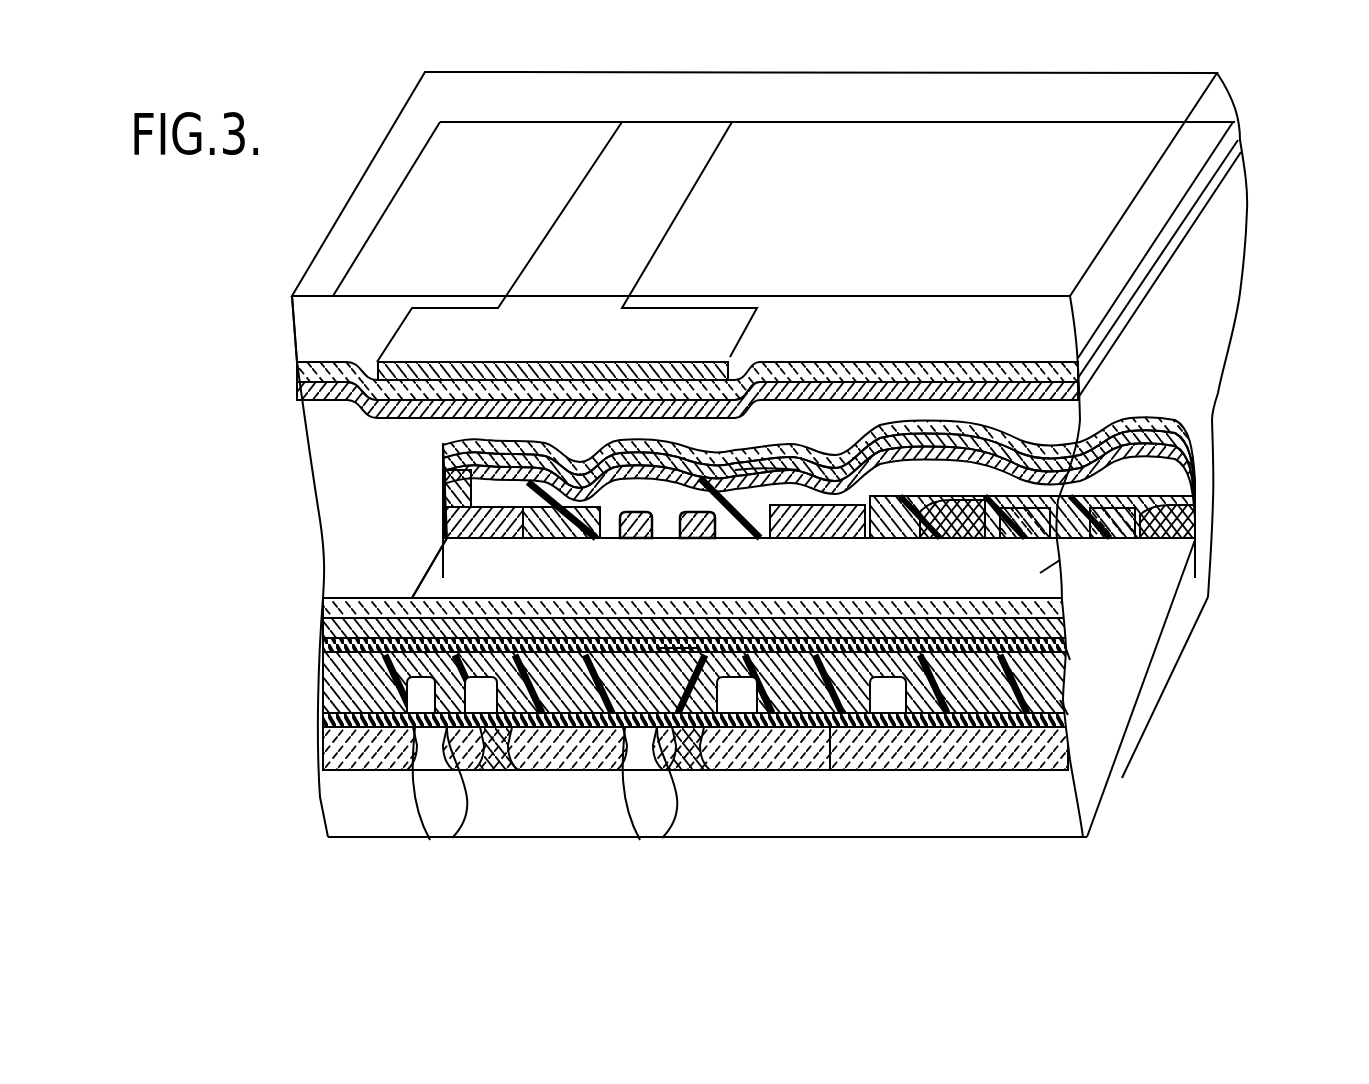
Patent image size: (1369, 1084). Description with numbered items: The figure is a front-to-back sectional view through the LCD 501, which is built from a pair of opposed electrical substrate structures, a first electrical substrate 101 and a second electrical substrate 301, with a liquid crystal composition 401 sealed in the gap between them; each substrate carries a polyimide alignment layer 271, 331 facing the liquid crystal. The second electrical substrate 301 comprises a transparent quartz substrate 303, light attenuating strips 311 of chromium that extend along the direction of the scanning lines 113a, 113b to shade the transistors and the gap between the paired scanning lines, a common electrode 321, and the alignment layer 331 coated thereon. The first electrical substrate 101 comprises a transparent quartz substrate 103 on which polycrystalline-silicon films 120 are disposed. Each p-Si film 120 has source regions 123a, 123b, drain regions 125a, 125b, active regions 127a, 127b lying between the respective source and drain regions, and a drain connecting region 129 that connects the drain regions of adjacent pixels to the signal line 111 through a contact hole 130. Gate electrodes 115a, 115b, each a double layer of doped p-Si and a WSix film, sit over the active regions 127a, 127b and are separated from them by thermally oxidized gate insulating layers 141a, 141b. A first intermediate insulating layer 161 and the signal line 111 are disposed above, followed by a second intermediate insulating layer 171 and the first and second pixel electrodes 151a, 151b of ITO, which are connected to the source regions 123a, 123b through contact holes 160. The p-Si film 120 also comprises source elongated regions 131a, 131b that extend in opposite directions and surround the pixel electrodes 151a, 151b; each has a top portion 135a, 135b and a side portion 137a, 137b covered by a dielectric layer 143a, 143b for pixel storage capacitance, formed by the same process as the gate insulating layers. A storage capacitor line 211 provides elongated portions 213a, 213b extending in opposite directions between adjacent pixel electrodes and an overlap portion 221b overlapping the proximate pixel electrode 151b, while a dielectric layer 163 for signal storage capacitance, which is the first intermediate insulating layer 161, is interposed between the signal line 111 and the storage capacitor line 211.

The first electrical substrate 101 is at (1210, 620).
The transparent quartz substrate 103 is at (1133, 737).
The signal line 111 is at (1073, 650).
The scanning line 113a is at (697, 538).
The scanning line 113b is at (637, 538).
The gate electrode 115a is at (660, 648).
The gate electrode 115b is at (413, 598).
The p-Si film 120 is at (565, 875).
The source region 123a is at (742, 838).
The source region 123b is at (445, 515).
The drain region 125a is at (567, 838).
The drain region 125b is at (507, 838).
The active region 127a is at (678, 838).
The active region 127b is at (442, 845).
The drain connecting region 129 is at (532, 838).
The contact hole 130 is at (545, 640).
The source elongated region 131a is at (827, 838).
The source elongated region 131b is at (325, 750).
The top portion 135a is at (1000, 540).
The top portion 135b is at (1097, 540).
The side portion 137a is at (990, 534).
The side portion 137b is at (1150, 555).
The gate insulating layer 141a is at (648, 783).
The gate insulating layer 141b is at (447, 783).
The dielectric layer for pixel storage capacitance 143a is at (857, 838).
The dielectric layer for pixel storage capacitance 143b is at (325, 720).
The first pixel electrode 151a is at (765, 475).
The second pixel electrode 151b is at (568, 468).
The contact hole 160 is at (480, 478).
The first intermediate insulating layer 161 is at (507, 625).
The dielectric layer for signal storage capacitance 163 is at (858, 538).
The second intermediate insulating layer 171 is at (672, 465).
The storage capacitor line 211 is at (1133, 520).
The elongated portion 213a is at (800, 838).
The elongated portion 213b is at (1090, 707).
The overlap portion 221b is at (325, 682).
The alignment layer 271 is at (325, 606).
The second electrical substrate 301 is at (1250, 123).
The transparent quartz substrate 303 is at (296, 335).
The light attenuating strip 311 is at (670, 195).
The common electrode 321 is at (298, 368).
The alignment layer 331 is at (298, 392).
The liquid crystal composition 401 is at (330, 455).
The LCD 501 is at (1262, 247).